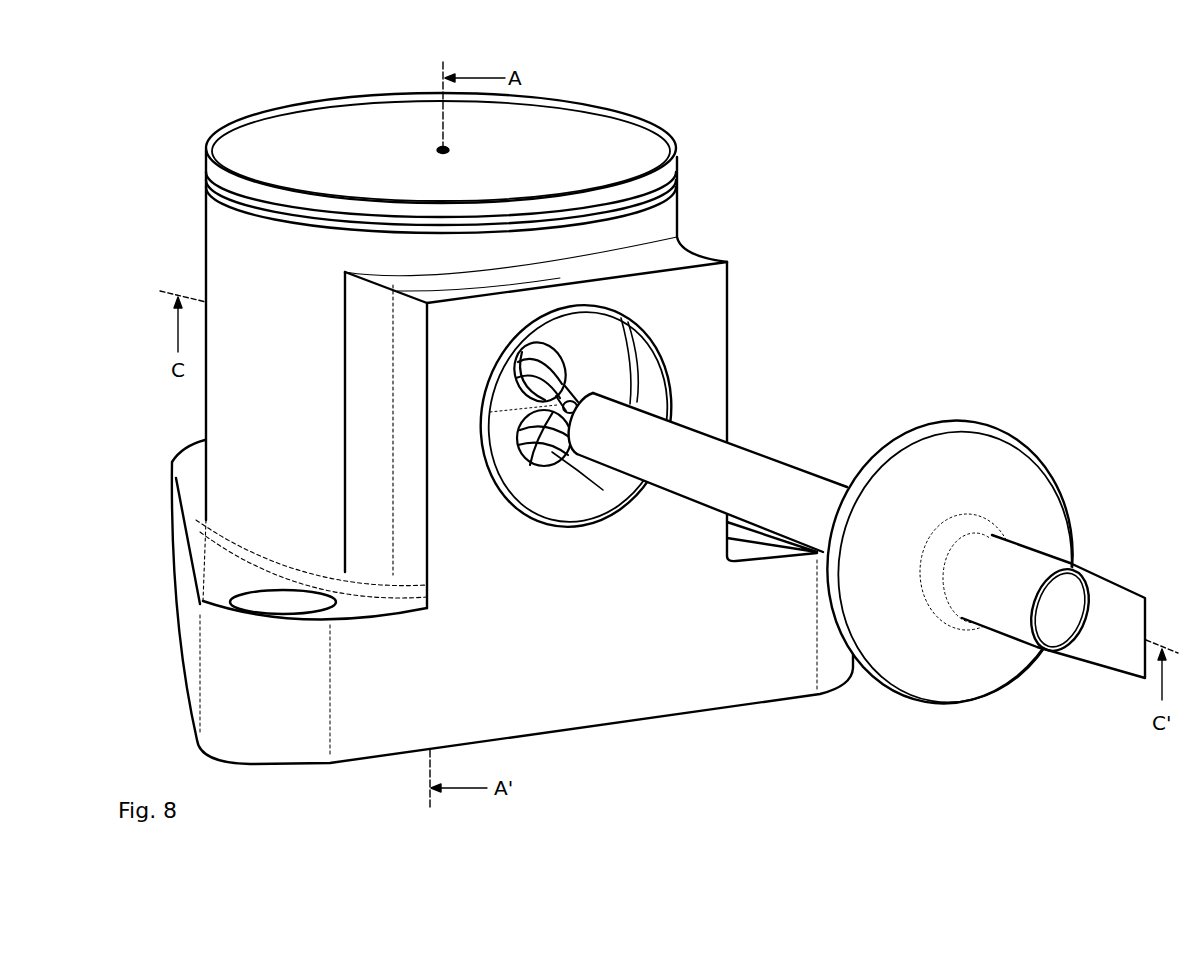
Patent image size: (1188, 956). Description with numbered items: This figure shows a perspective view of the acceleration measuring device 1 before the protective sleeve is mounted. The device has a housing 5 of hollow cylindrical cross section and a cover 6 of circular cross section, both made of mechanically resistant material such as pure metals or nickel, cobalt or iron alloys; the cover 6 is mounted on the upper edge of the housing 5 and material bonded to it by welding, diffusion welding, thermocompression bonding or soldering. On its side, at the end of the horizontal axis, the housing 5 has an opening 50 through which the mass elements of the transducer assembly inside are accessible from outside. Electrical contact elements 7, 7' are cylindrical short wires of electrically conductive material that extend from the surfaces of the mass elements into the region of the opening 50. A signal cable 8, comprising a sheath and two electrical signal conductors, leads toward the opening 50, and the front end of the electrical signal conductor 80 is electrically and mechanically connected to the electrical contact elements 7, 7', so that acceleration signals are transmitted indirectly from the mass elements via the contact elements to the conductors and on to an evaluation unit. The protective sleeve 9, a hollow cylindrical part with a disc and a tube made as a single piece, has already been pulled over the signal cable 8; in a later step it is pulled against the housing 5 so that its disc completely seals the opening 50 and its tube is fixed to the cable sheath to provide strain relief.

The acceleration measuring device 1 is at (404, 77).
The housing 5 is at (755, 673).
The cover 6 is at (626, 143).
The electrical contact element 7 is at (585, 351).
The electrical contact element 7' is at (586, 486).
The signal cable 8 is at (751, 428).
The protective sleeve 9 is at (1014, 468).
The opening 50 is at (649, 363).
The electrical signal conductor 80 is at (577, 420).